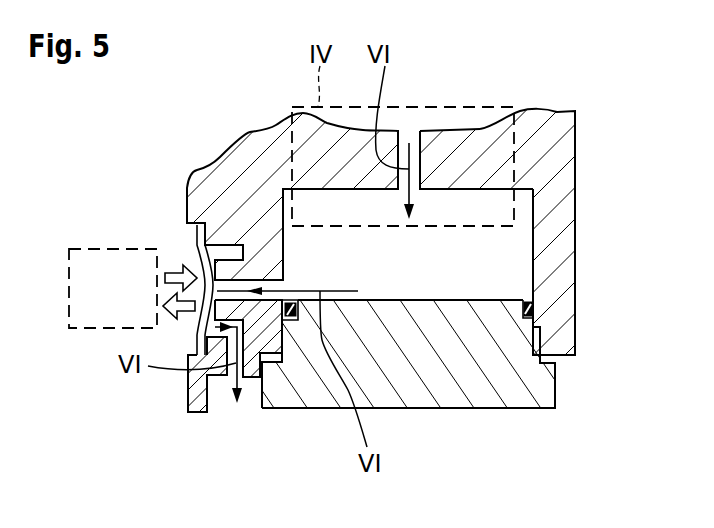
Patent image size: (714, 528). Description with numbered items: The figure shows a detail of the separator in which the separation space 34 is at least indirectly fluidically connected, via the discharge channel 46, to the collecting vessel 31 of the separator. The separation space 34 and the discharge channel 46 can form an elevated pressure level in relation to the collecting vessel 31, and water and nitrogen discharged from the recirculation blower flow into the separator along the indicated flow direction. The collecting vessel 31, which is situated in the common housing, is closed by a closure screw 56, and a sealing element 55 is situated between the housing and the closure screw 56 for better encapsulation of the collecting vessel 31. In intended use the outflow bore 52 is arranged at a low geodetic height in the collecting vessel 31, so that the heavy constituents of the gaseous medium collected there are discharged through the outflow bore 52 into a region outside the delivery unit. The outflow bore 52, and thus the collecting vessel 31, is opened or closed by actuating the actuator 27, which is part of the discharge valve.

The actuator 27 is at (126, 302).
The collecting vessel 31 is at (468, 248).
The separation space 34 is at (447, 98).
The discharge channel 46 is at (437, 160).
The outflow bore 52 is at (241, 279).
The sealing element 55 is at (534, 310).
The closure screw 56 is at (418, 410).